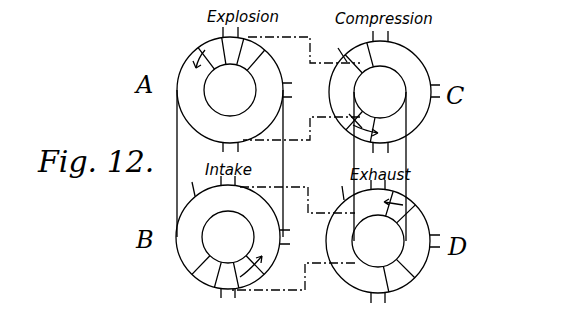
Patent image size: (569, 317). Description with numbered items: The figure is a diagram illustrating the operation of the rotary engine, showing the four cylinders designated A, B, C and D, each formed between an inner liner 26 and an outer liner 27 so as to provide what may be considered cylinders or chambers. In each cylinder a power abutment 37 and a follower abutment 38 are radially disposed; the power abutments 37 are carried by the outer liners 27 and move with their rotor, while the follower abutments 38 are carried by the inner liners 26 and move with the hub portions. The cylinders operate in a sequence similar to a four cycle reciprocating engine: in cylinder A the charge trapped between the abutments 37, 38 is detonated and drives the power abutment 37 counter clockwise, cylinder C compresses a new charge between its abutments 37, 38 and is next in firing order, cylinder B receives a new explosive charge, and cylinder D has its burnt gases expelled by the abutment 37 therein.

The inner liner 26 is at (404, 82).
The outer liner 27 is at (205, 50).
The power abutment 37 is at (230, 52).
The follower abutment 38 is at (250, 54).